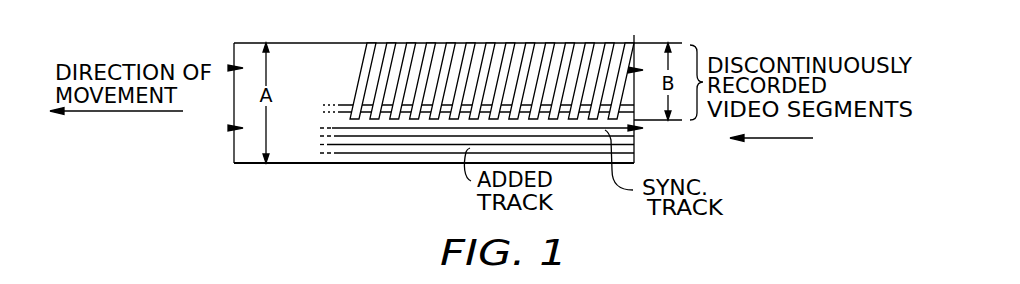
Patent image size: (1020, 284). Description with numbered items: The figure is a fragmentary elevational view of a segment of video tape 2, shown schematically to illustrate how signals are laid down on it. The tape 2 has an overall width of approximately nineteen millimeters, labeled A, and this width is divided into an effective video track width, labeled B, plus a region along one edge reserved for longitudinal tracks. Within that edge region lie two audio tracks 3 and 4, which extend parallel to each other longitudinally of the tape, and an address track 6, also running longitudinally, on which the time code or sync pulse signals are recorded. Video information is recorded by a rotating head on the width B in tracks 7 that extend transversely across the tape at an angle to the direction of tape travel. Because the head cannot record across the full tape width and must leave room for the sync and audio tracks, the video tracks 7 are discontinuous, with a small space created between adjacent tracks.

The segment of video tape 2 is at (293, 163).
The audio track 3 is at (370, 147).
The audio track 4 is at (344, 128).
The address track 6 is at (345, 106).
The video recording tracks 7 is at (420, 58).